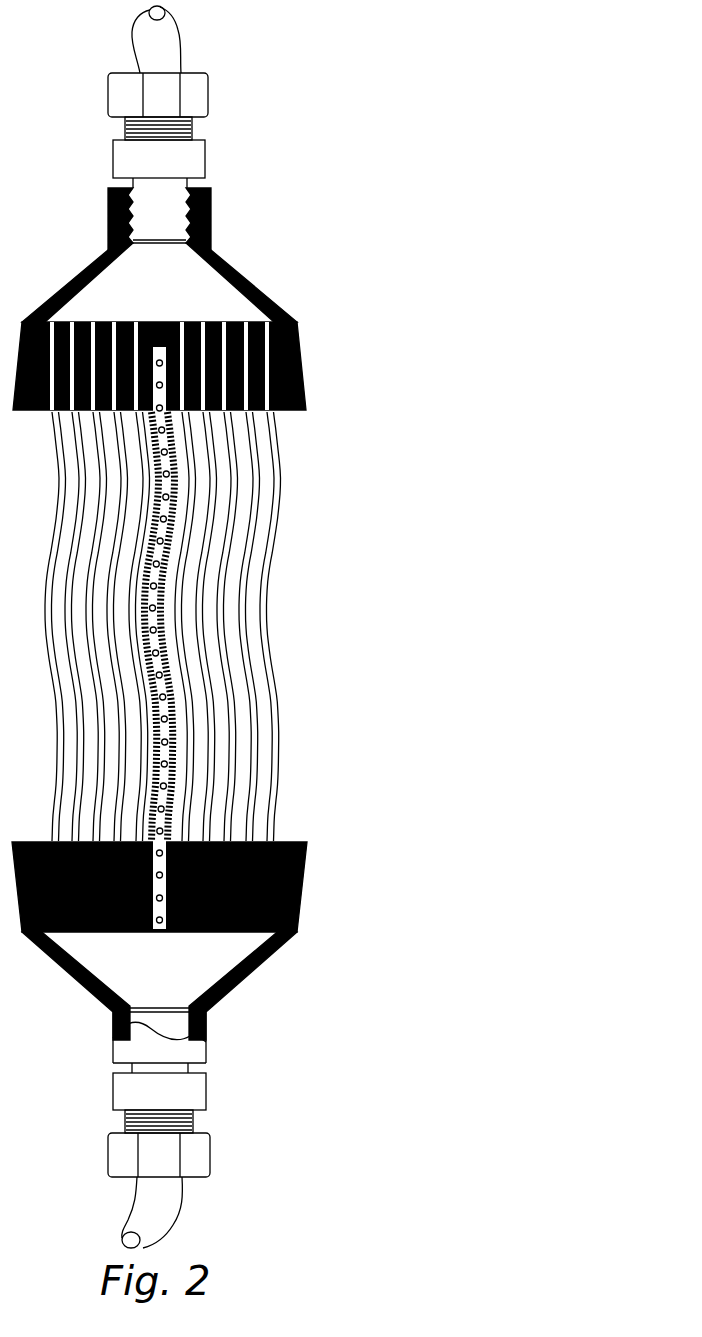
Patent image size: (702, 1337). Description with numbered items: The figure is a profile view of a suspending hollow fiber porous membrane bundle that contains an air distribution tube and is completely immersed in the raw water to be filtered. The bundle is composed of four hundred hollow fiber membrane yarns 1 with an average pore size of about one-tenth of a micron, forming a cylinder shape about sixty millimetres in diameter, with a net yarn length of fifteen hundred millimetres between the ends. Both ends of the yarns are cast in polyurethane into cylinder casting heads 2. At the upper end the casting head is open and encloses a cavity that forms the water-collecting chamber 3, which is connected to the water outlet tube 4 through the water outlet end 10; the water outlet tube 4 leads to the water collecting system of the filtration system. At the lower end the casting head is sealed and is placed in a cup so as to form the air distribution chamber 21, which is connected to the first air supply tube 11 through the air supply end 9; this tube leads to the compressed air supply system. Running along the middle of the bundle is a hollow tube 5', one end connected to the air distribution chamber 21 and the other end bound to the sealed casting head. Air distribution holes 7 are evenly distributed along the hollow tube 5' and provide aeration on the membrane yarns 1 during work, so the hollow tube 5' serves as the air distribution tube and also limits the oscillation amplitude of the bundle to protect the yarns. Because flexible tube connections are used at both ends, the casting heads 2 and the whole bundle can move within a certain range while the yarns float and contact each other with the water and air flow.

The hollow fiber membrane yarns 1 is at (230, 667).
The casting heads 2 is at (258, 323).
The water-collecting chamber 3 is at (177, 293).
The water outlet tube 4 is at (160, 37).
The hollow tube 5' is at (264, 641).
The air distribution holes 7 is at (160, 613).
The air supply end 9 is at (280, 948).
The water outlet end 10 is at (297, 350).
The first air supply tube 11 is at (157, 1200).
The air distribution chamber 21 is at (197, 955).